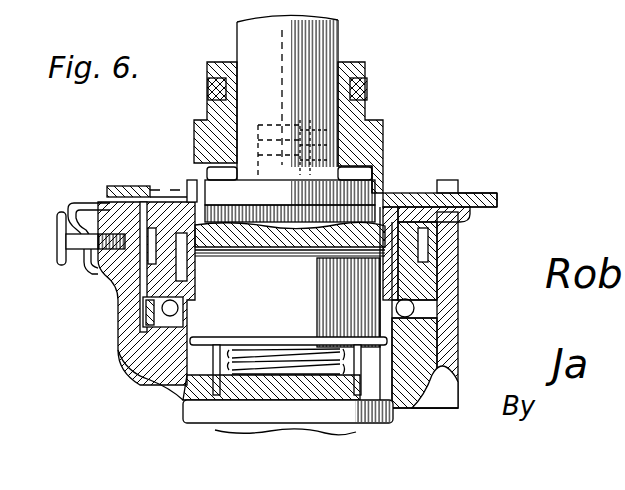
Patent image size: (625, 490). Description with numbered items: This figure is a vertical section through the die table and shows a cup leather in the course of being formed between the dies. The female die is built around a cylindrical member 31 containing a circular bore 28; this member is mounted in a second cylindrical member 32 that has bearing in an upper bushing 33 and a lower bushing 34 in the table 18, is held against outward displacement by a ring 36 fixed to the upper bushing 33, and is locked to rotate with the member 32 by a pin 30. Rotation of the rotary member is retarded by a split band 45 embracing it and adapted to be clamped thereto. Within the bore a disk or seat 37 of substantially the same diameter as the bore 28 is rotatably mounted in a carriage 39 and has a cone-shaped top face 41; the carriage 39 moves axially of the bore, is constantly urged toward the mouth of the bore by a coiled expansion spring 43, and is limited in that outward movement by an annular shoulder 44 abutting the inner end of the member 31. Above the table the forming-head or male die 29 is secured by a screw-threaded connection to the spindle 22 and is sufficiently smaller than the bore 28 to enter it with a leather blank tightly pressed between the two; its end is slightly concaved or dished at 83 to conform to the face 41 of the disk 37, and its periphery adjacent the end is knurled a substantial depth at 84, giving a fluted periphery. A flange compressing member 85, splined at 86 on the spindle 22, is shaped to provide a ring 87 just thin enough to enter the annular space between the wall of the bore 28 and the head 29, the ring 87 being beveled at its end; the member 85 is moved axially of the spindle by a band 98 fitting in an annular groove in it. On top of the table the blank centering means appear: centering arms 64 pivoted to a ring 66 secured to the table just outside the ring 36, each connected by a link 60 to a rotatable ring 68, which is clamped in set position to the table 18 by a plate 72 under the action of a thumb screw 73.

The table 18 is at (130, 328).
The spindle 22 is at (340, 35).
The circular bore 28 is at (428, 222).
The forming-head or male die 29 is at (190, 180).
The pin 30 is at (175, 196).
The cylindrical member 31 is at (147, 278).
The second cylindrical member 32 is at (392, 262).
The upper bushing 33 is at (430, 212).
The lower bushing 34 is at (440, 330).
The ring 36 is at (430, 194).
The disk or seat 37 is at (258, 258).
The carriage 39 is at (313, 302).
The cone-shaped top face 41 is at (300, 250).
The coiled expansion spring 43 is at (420, 352).
The annular shoulder 44 is at (228, 336).
The split band 45 is at (424, 246).
The link 60 is at (497, 195).
The centering arms 64 is at (412, 192).
The ring 66 is at (460, 200).
The ring 68 is at (497, 206).
The plate 72 is at (74, 203).
The thumb screw 73 is at (58, 228).
The dished end 83 is at (250, 244).
The knurled surface 84 is at (212, 185).
The flange compressing member 85 is at (383, 124).
The spline 86 is at (282, 42).
The ring 87 is at (385, 190).
The band 98 is at (367, 90).